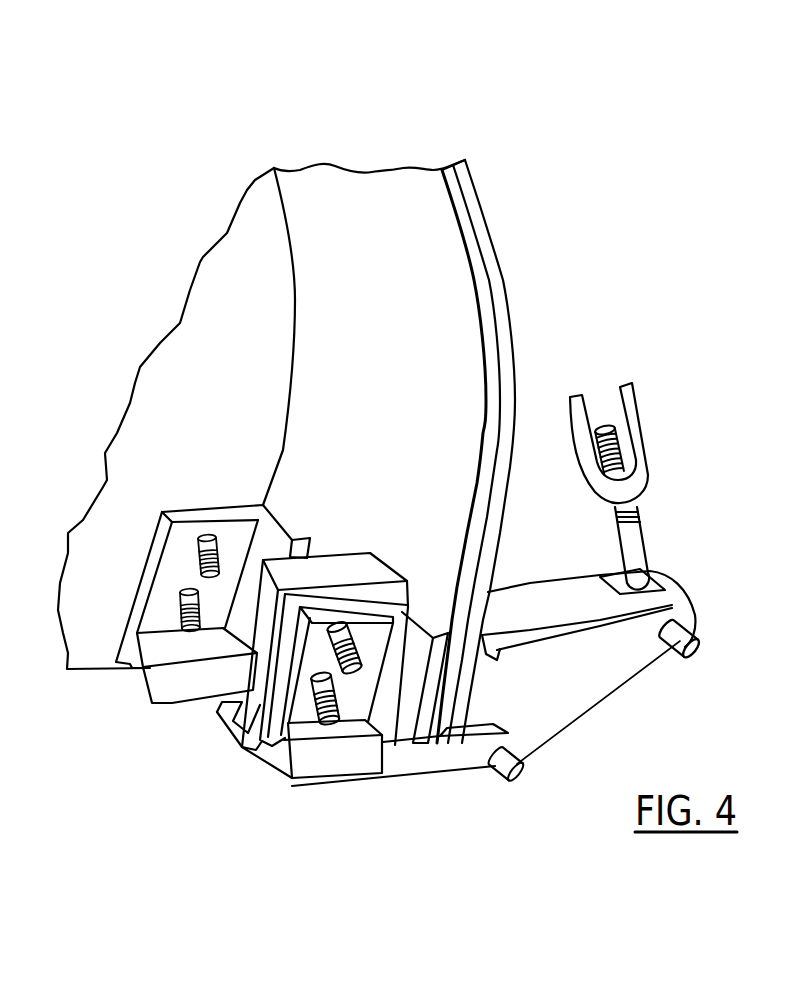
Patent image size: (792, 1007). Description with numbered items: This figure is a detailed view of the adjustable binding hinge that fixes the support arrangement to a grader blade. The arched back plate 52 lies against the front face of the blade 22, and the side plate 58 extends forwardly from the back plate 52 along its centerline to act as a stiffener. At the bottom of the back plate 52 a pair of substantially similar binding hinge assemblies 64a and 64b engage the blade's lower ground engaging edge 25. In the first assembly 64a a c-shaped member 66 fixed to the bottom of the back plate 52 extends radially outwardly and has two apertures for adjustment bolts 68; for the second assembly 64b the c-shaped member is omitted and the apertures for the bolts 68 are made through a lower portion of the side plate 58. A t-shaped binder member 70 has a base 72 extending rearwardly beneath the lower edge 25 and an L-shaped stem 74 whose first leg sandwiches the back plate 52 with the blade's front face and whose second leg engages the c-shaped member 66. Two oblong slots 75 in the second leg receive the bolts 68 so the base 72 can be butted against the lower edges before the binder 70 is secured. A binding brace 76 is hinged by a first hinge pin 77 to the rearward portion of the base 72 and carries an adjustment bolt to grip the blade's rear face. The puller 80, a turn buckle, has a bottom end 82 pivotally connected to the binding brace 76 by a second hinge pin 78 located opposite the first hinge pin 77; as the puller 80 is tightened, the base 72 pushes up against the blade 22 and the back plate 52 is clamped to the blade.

The blade 22 is at (505, 347).
The lower ground engaging edge 25 is at (455, 737).
The back plate 52 is at (400, 325).
The side plate 58 is at (242, 402).
The binding hinge assembly 64a is at (266, 803).
The binding hinge assembly 64b is at (142, 720).
The c-shaped member 66 is at (232, 723).
The adjustment bolts 68 is at (364, 747).
The t-shaped binder member 70 is at (333, 803).
The base 72 is at (445, 762).
The L-shaped stem 74 is at (393, 723).
The oblong slots 75 is at (347, 635).
The binding brace 76 is at (623, 663).
The first hinge pin 77 is at (523, 772).
The second hinge pin 78 is at (700, 650).
The puller 80 is at (633, 420).
The bottom end 82 is at (668, 532).